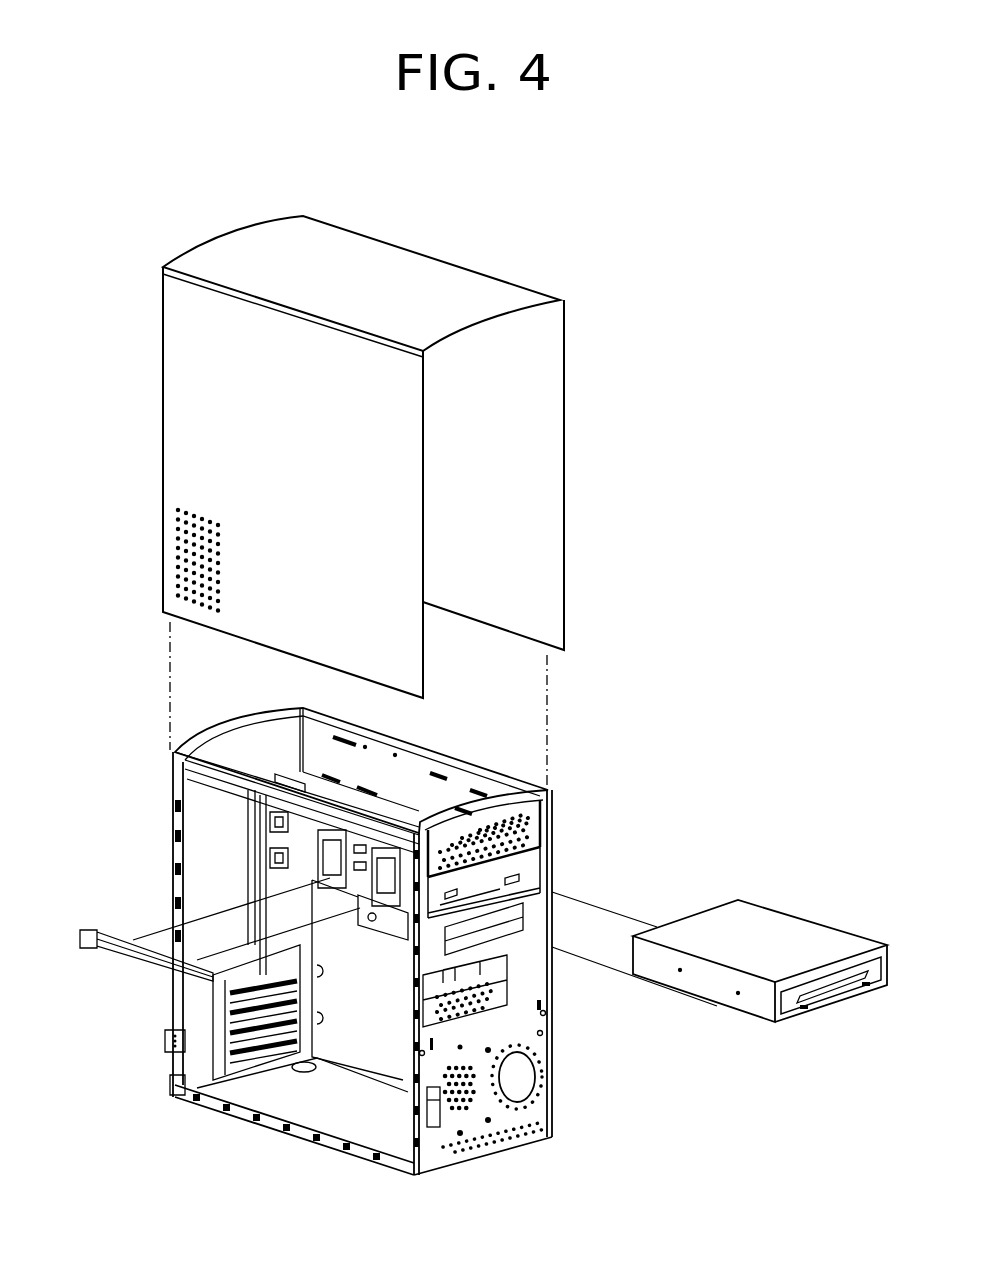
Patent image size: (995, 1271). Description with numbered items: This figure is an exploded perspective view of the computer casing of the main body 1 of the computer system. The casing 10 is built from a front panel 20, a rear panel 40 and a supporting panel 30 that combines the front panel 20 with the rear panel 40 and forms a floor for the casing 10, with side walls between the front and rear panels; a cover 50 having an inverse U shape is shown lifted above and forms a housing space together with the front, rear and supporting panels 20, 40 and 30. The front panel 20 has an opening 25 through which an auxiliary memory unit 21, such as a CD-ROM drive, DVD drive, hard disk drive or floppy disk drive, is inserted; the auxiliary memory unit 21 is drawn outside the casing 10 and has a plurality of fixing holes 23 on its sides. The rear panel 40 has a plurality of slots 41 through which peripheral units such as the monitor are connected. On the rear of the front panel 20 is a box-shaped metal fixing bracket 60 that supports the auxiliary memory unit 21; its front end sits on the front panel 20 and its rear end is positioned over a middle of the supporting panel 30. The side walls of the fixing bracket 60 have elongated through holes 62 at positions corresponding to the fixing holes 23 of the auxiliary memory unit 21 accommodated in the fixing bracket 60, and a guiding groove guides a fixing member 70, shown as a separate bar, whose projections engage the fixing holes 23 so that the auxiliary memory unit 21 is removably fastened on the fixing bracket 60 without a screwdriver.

The main body 1 is at (451, 732).
The casing 10 is at (337, 1232).
The front panel 20 is at (410, 1130).
The auxiliary memory unit 21 is at (813, 915).
The fixing holes 23 is at (738, 1000).
The opening 25 is at (517, 864).
The supporting panel 30 is at (313, 1112).
The rear panel 40 is at (170, 1083).
The slots 41 is at (360, 900).
The cover 50 is at (570, 465).
The fixing bracket 60 is at (273, 840).
The through holes 62 is at (512, 935).
The fixing member 70 is at (107, 950).